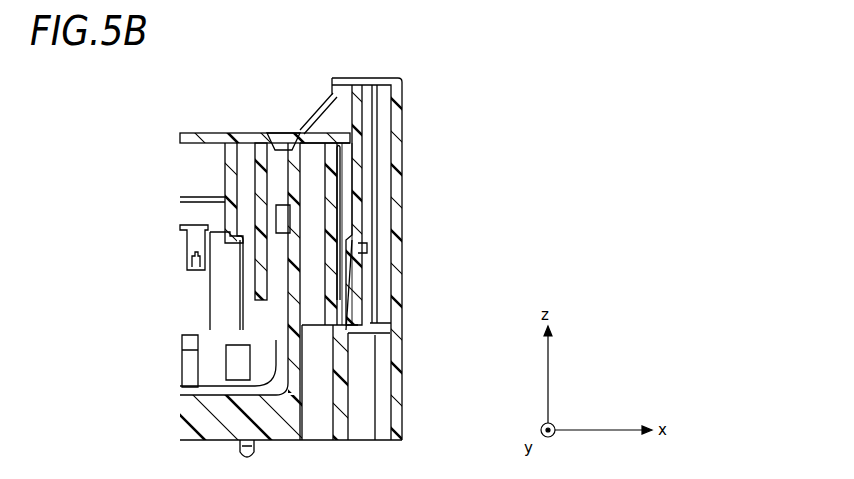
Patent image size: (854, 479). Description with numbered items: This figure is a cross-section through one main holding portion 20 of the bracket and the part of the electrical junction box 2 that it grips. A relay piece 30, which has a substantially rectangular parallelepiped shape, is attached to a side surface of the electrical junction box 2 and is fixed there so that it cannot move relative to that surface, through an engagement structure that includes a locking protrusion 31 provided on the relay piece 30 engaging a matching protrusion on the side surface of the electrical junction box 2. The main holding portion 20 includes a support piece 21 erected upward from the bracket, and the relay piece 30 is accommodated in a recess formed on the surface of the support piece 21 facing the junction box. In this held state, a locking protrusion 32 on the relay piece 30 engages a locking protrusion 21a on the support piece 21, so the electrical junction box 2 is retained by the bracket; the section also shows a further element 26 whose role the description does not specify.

The electrical junction box 2 is at (204, 132).
The relay piece 30 is at (296, 128).
The main holding portion 20 is at (405, 92).
The support piece 21 is at (396, 139).
The locking protrusion 21a is at (358, 230).
The locking protrusion 32 is at (365, 239).
The terminal holding portion 26 is at (290, 246).
The locking protrusion 31 is at (284, 252).